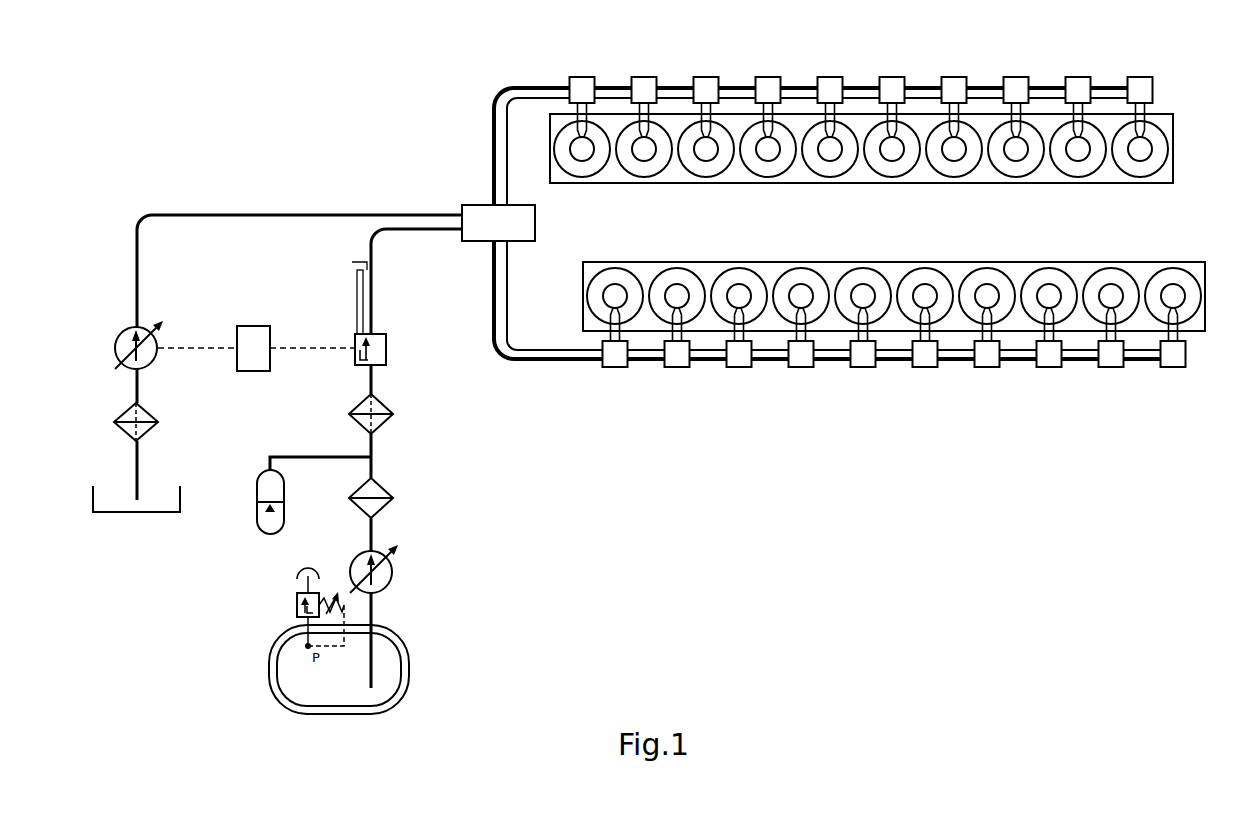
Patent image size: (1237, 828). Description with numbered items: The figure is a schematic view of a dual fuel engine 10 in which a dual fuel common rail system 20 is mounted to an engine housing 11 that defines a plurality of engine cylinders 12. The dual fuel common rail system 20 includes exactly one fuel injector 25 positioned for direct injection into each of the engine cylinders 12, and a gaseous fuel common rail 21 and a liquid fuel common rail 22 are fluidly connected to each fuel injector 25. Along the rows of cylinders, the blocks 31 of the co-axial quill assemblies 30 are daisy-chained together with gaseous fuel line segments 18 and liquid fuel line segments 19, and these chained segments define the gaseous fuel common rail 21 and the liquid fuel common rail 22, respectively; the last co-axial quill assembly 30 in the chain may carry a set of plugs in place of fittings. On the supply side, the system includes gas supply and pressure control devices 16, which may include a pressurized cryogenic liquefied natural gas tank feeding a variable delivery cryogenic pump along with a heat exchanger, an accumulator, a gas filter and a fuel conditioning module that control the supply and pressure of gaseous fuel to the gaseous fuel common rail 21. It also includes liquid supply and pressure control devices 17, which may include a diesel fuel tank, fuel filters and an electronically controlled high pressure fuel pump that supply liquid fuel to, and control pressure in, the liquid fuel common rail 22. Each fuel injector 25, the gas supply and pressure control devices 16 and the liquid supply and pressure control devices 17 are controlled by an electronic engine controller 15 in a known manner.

The dual fuel engine 10 is at (873, 233).
The engine housing 11 is at (620, 262).
The engine cylinders 12 is at (698, 176).
The electronic engine controller 15 is at (253, 326).
The gas supply and pressure control devices 16 is at (246, 469).
The liquid supply and pressure control devices 17 is at (100, 321).
The gaseous fuel line segments 18 is at (919, 100).
The liquid fuel line segments 19 is at (985, 85).
The dual fuel common rail system 20 is at (868, 55).
The gaseous fuel common rail 21 is at (741, 97).
The liquid fuel common rail 22 is at (920, 87).
The fuel injector 25 is at (777, 159).
The co-axial quill assemblies 30 is at (830, 73).
The blocks 31 is at (706, 77).